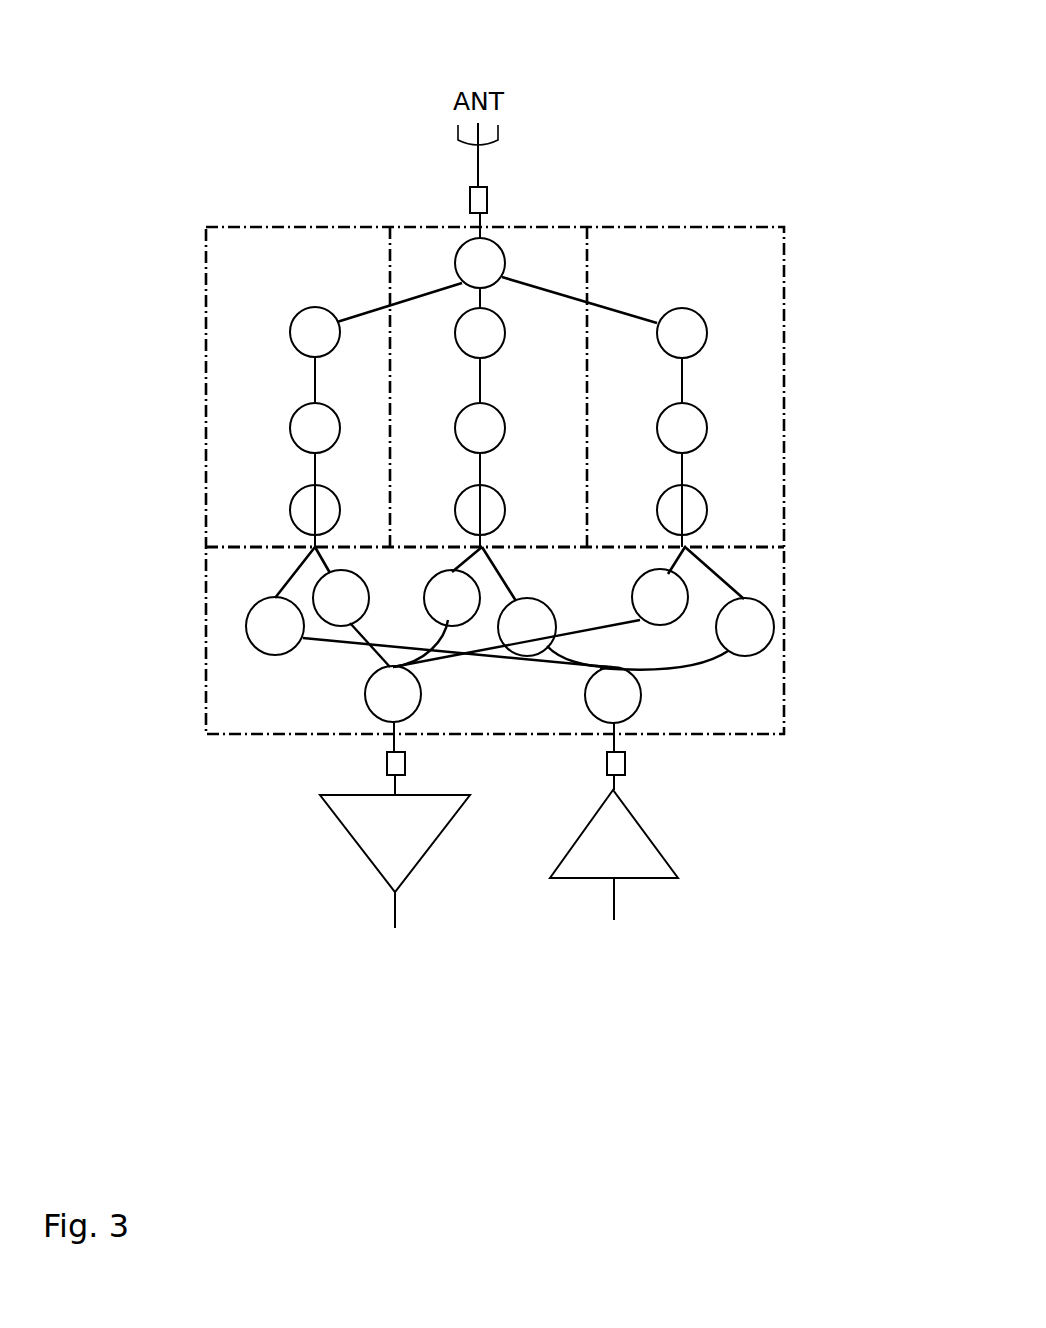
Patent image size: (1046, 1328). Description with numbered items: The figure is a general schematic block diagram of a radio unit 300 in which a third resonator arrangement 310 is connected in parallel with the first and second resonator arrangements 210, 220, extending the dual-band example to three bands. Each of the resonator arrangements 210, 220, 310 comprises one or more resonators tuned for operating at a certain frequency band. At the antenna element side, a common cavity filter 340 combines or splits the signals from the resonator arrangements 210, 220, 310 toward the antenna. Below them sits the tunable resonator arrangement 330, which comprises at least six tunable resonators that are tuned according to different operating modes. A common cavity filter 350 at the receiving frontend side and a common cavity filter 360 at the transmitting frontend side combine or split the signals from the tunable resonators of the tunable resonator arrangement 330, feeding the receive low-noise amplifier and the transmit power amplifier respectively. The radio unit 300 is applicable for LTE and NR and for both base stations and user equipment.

The radio unit 300 is at (277, 100).
The first resonator arrangement 210 is at (260, 362).
The third resonator arrangement 310 is at (747, 362).
The second resonator arrangement 220 is at (527, 275).
The common cavity filter 340 is at (472, 260).
The tunable resonator arrangement 330 is at (747, 575).
The common cavity filter 350 is at (380, 698).
The common cavity filter 360 is at (618, 702).